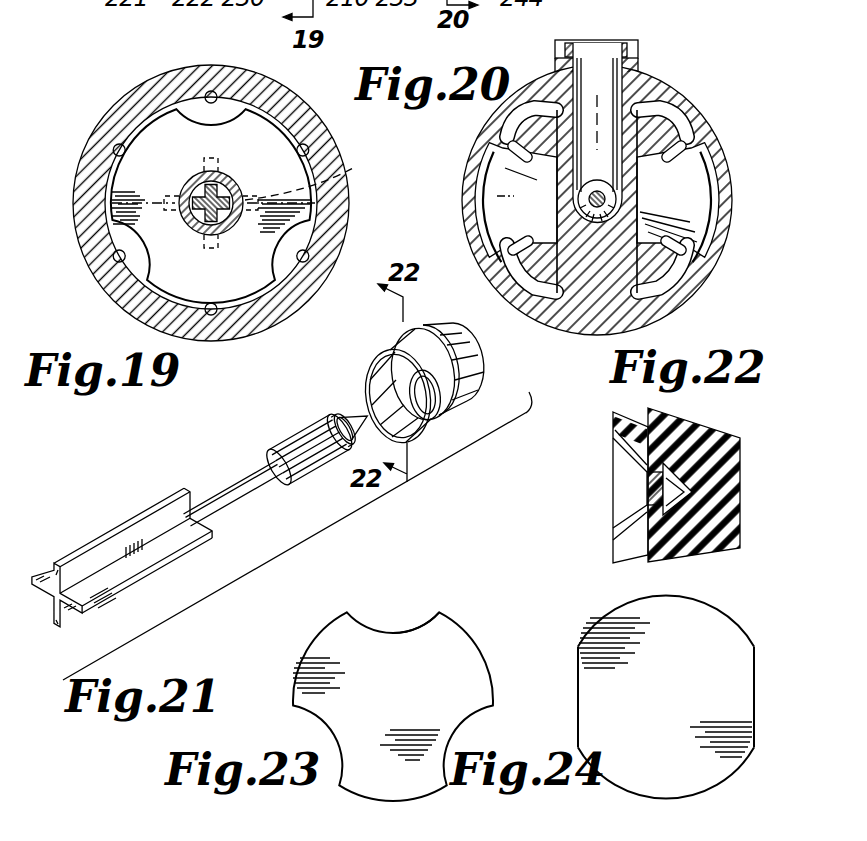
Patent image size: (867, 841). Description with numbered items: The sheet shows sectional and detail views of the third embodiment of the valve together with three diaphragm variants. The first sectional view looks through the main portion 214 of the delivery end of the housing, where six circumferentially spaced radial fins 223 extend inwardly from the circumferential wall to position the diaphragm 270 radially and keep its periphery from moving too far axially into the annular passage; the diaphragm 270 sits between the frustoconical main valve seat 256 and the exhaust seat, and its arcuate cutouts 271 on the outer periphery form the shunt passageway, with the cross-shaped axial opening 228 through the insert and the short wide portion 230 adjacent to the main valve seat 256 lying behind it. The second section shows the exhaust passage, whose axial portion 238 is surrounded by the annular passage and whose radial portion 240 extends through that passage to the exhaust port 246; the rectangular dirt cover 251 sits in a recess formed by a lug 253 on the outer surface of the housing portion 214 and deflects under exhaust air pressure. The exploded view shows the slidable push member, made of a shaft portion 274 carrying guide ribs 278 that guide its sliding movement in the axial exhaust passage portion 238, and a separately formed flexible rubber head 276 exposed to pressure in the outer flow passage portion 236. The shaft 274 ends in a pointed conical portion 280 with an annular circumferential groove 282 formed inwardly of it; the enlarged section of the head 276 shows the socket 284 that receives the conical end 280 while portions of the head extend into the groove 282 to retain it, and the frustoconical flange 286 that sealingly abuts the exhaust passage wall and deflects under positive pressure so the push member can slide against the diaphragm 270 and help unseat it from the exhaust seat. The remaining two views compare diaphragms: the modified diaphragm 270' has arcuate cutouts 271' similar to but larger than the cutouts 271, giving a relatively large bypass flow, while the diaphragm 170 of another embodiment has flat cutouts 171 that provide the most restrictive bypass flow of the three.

In FIG. 19, the main portion of the delivery end of the housing 214 is at (134, 90).
In FIG. 20, the main portion of the delivery end of the housing 214 is at (476, 157).
In FIG. 19, the arcuate cutouts 271 is at (310, 181).
In FIG. 19, the short wide portion 230 is at (108, 188).
In FIG. 19, the guide ribs 278 is at (199, 192).
In FIG. 21, the guide ribs 278 is at (73, 553).
In FIG. 19, the axial portion of the exhaust passage 238 is at (229, 188).
In FIG. 19, the cross-shaped axial opening 228 is at (329, 176).
In FIG. 19, the main valve seat 256 is at (118, 242).
In FIG. 19, the diaphragm 270 is at (213, 206).
In FIG. 19, the radial fins 223 is at (110, 300).
In FIG. 20, the radial fins 223 is at (662, 145).
In FIG. 20, the lug 253 is at (555, 48).
In FIG. 20, the dirt cover 251 is at (586, 43).
In FIG. 20, the radial portion of the exhaust passage 240 is at (603, 46).
In FIG. 20, the exhaust port 246 is at (637, 40).
In FIG. 20, the outer portion of the flow passage 236 is at (637, 193).
In FIG. 20, the shaft portion 274 is at (606, 207).
In FIG. 21, the shaft portion 274 is at (192, 479).
In FIG. 21, the annular circumferential groove 282 is at (288, 432).
In FIG. 21, the pointed conical portion 280 is at (348, 409).
In FIG. 21, the head 276 is at (356, 380).
In FIG. 22, the head 276 is at (606, 476).
In FIG. 21, the frustoconical flange 286 is at (392, 345).
In FIG. 22, the frustoconical flange 286 is at (630, 420).
In FIG. 21, the socket 284 is at (452, 418).
In FIG. 22, the socket 284 is at (613, 509).
In FIG. 23, the modified diaphragm 270' is at (393, 674).
In FIG. 23, the arcuate cutouts 271' is at (443, 597).
In FIG. 24, the diaphragm 170 is at (604, 610).
In FIG. 24, the flat cutouts 171 is at (580, 675).